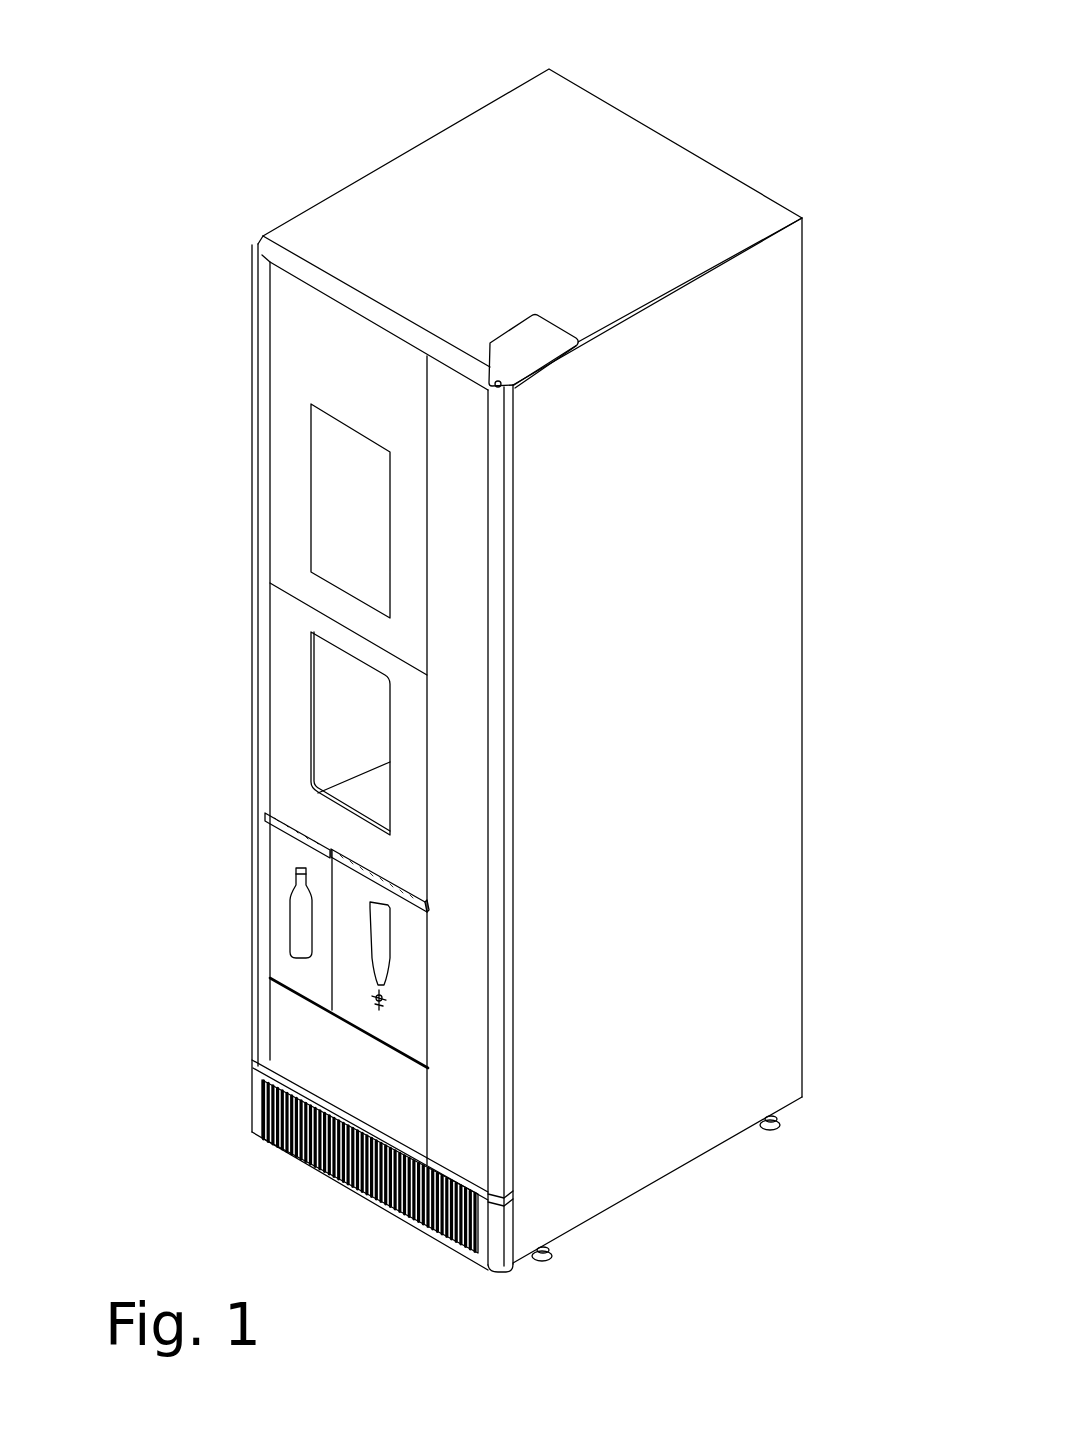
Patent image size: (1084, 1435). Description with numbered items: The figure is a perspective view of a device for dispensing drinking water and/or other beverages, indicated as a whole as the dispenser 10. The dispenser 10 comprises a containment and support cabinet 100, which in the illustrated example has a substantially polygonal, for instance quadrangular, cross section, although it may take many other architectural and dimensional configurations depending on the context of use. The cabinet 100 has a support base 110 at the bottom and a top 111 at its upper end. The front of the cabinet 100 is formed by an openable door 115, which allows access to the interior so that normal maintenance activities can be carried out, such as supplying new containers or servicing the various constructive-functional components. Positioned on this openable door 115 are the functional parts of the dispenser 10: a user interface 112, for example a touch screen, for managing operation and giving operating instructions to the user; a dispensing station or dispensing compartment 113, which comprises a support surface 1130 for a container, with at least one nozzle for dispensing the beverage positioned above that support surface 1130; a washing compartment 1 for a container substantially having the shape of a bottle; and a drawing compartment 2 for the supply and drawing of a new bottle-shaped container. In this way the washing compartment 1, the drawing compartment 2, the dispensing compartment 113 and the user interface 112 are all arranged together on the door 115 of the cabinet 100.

The containment and support cabinet 100 is at (282, 202).
The dispenser 10 is at (806, 1280).
The support base 110 is at (642, 1192).
The top 111 is at (716, 166).
The user interface 112 is at (328, 473).
The dispensing station 113 is at (340, 736).
The support surface 1130 is at (355, 800).
The openable door 115 is at (257, 288).
The drawing compartment 2 is at (270, 904).
The washing compartment 1 is at (354, 1005).